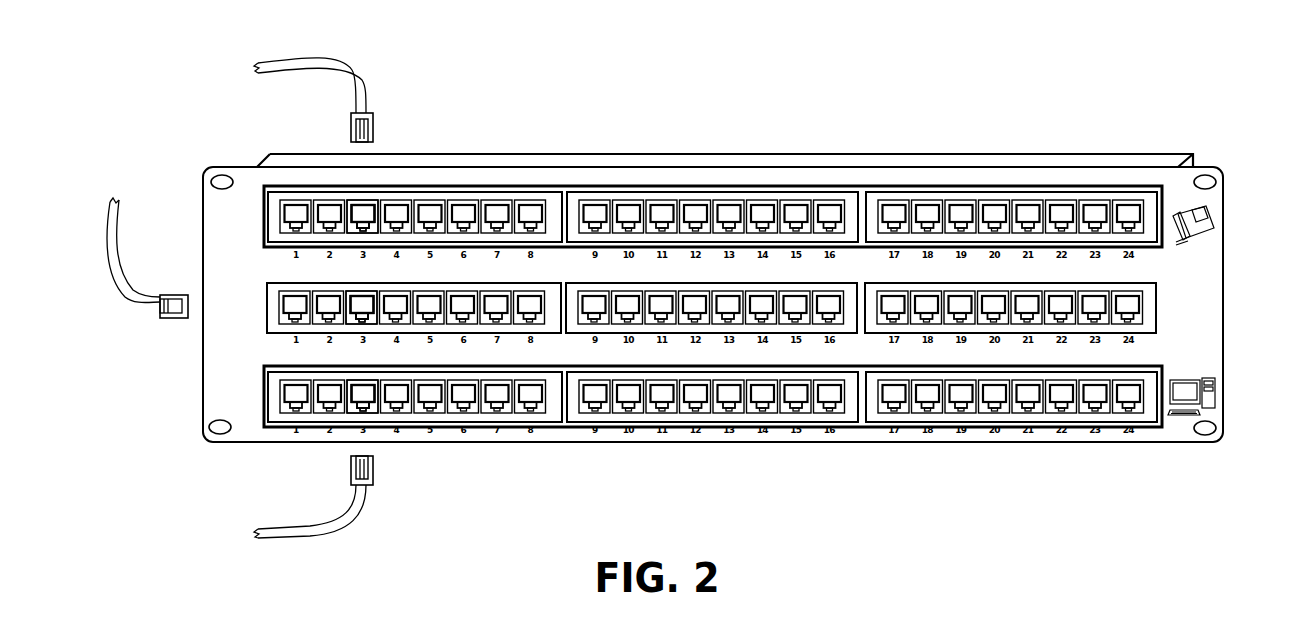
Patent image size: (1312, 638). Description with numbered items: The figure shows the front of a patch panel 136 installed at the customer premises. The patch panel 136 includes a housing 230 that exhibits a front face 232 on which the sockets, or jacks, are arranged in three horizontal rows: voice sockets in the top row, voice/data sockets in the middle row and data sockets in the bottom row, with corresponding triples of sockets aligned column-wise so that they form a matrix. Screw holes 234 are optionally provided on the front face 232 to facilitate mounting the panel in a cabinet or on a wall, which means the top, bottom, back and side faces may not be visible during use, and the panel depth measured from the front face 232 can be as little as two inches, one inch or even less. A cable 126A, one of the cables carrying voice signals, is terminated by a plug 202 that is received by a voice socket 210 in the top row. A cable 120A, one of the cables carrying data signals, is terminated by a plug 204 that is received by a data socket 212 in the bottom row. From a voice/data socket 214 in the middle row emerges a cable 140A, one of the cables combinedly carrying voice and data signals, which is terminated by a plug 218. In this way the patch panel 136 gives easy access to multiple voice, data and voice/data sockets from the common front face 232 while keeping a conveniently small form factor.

The cable 126A is at (278, 75).
The plug 202 is at (378, 127).
The voice socket 210 is at (363, 222).
The housing 230 is at (852, 163).
The patch panel 136 is at (728, 271).
The screw holes 234 is at (1208, 180).
The cable 140A is at (108, 221).
The voice/data socket 214 is at (365, 312).
The plug 218 is at (177, 321).
The front face 232 is at (728, 302).
The data socket 212 is at (362, 393).
The plug 204 is at (376, 470).
The cable 120A is at (279, 525).